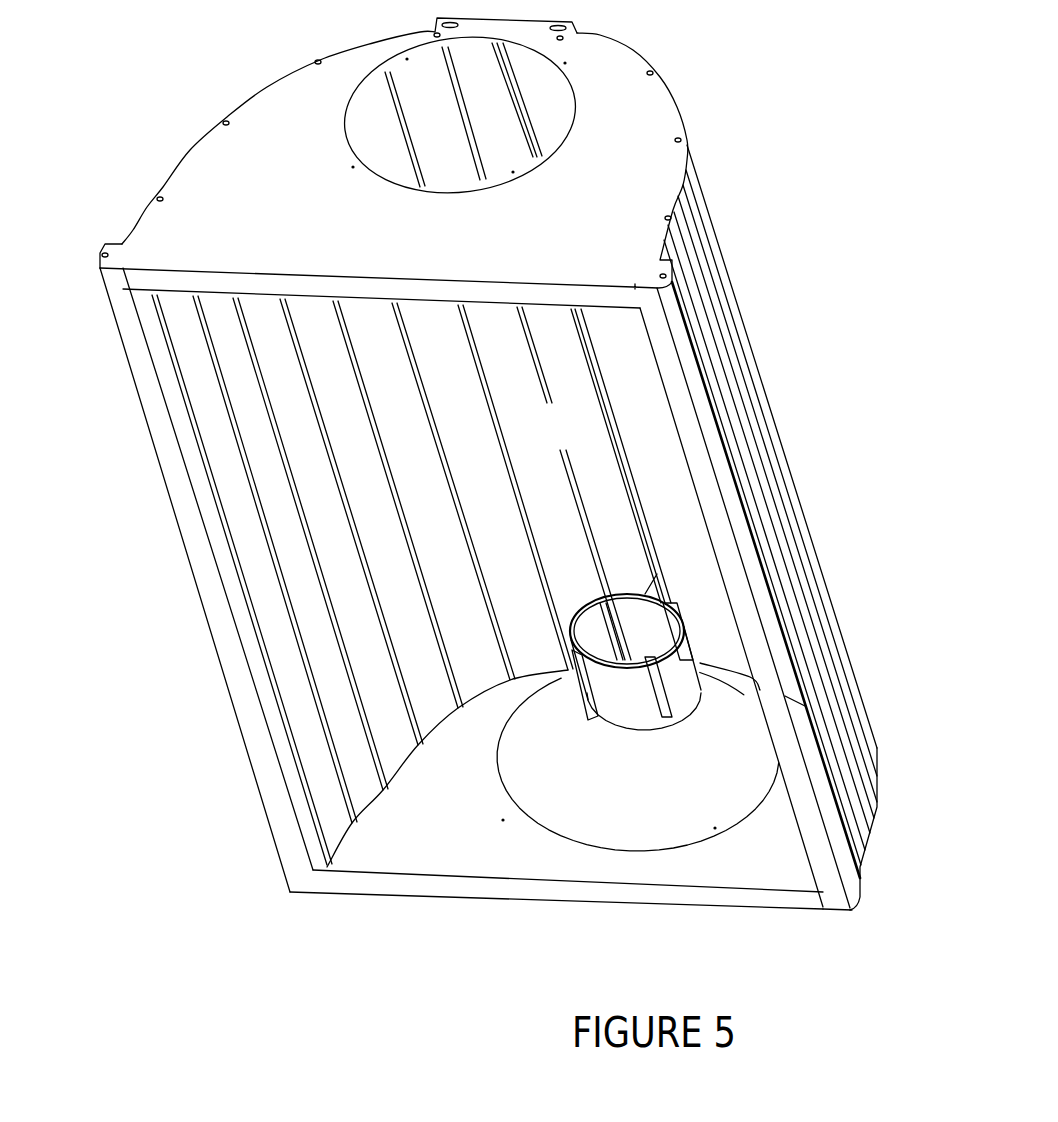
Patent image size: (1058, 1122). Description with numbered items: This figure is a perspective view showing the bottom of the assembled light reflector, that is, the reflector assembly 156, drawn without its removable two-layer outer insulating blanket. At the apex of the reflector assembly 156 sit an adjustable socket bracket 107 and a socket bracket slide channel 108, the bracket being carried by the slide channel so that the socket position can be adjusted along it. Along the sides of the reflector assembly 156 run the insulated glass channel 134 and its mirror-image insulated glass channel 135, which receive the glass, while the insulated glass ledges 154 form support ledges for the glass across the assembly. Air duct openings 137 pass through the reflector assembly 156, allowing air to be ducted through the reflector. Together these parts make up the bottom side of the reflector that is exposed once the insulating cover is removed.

The reflector assembly 156 is at (509, 494).
The insulated glass ledge 154 is at (162, 277).
The air duct opening 137 is at (348, 140).
The socket bracket slide channel 108 is at (610, 440).
The adjustable socket bracket 107 is at (690, 703).
The insulated glass channel mirror 135 is at (282, 880).
The insulated glass channel 134 is at (858, 908).